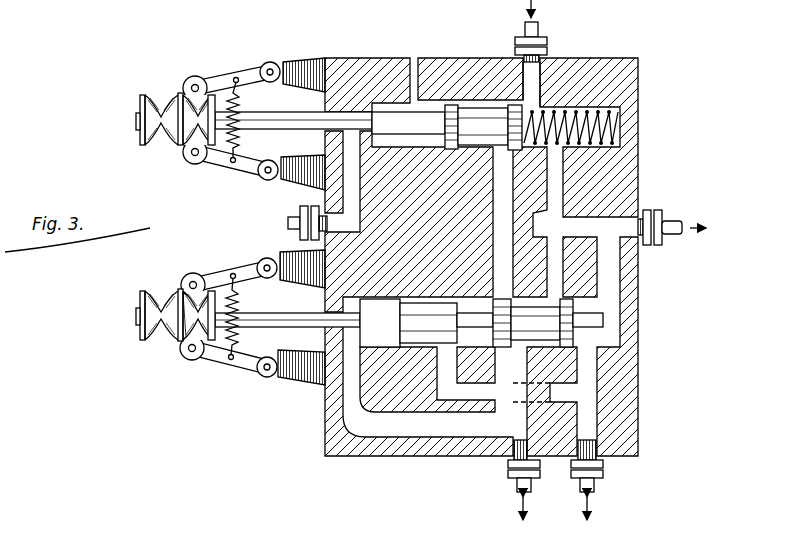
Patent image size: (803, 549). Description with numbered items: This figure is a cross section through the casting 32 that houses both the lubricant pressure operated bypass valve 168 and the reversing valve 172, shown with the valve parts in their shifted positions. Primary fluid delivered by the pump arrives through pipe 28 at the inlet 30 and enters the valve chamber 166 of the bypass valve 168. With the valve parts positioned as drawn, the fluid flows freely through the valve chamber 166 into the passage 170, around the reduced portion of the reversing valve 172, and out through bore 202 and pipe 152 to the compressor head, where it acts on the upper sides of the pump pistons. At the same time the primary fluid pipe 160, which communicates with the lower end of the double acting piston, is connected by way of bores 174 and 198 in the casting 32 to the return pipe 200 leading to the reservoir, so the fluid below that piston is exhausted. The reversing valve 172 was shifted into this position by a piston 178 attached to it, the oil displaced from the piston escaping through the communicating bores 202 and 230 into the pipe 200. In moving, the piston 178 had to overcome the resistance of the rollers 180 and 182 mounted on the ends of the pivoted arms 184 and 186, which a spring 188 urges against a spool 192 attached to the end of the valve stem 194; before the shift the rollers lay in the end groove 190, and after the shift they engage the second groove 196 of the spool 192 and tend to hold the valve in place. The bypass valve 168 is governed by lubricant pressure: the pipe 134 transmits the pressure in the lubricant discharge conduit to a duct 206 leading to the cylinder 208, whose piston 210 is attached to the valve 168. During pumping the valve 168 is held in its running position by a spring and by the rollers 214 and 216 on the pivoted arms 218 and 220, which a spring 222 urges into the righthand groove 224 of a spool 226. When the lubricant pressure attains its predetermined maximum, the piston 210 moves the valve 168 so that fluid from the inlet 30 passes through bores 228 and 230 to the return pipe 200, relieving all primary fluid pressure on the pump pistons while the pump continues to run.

The pipe 28 is at (522, 32).
The inlet 30 is at (530, 82).
The casting 32 is at (375, 66).
The pipe 134 is at (287, 223).
The pipe 152 is at (513, 483).
The primary fluid pipe 160 is at (595, 485).
The valve chamber 166 is at (555, 150).
The bypass valve 168 is at (472, 110).
The passage 170 is at (512, 178).
The reversing valve 172 is at (563, 320).
The bore 174 is at (583, 417).
The piston 178 is at (323, 395).
The roller 180 is at (187, 365).
The roller 182 is at (187, 272).
The pivoted arm 184 is at (247, 372).
The pivoted arm 186 is at (240, 265).
The spring 188 is at (237, 297).
The end groove 190 is at (150, 338).
The spool 192 is at (137, 323).
The valve stem 194 is at (303, 327).
The second groove 196 is at (172, 338).
The bore 198 is at (607, 280).
The return pipe 200 is at (667, 220).
The bore 202 is at (467, 453).
The duct 206 is at (327, 187).
The cylinder 208 is at (353, 87).
The piston 210 is at (383, 110).
The roller 214 is at (183, 157).
The roller 216 is at (190, 79).
The pivoted arm 218 is at (240, 168).
The pivoted arm 220 is at (247, 72).
The spring 222 is at (240, 138).
The righthand groove 224 is at (193, 113).
The spool 226 is at (143, 100).
The bore 228 is at (640, 78).
The bore 230 is at (530, 225).